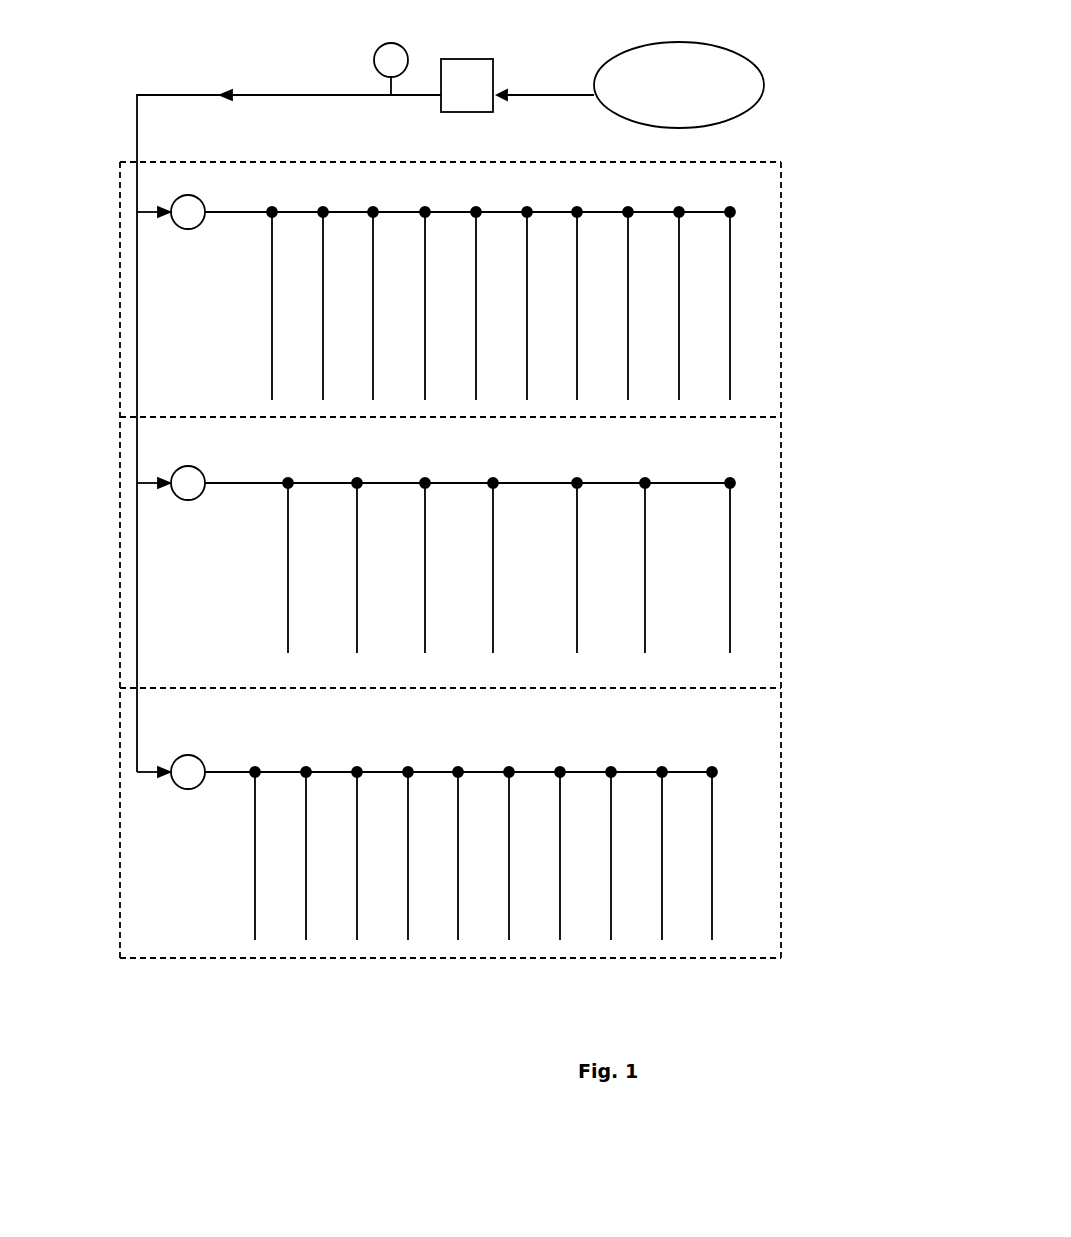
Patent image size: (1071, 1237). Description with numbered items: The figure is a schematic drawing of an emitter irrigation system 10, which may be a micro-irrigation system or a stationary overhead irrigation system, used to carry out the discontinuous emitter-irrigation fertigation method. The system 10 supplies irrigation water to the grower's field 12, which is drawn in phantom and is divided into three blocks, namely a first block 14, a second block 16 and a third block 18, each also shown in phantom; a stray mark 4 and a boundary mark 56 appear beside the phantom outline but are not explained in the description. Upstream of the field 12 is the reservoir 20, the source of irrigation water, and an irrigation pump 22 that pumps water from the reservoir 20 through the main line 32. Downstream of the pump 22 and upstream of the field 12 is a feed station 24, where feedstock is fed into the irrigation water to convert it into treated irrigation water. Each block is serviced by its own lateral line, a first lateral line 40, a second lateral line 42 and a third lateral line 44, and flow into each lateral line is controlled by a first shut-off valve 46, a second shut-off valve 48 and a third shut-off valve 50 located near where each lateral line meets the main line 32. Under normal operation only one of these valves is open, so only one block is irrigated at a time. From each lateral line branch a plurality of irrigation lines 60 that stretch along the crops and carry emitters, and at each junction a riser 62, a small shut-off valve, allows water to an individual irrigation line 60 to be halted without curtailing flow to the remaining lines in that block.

The irrigation system 10 is at (237, 1010).
The section line 4 is at (753, 676).
The field 12 is at (781, 450).
The first block 14 is at (781, 332).
The second block 16 is at (781, 568).
The third block 18 is at (781, 807).
The reservoir 20 is at (748, 60).
The irrigation pump 22 is at (458, 58).
The feed station 24 is at (400, 46).
The main line 32 is at (265, 93).
The first lateral line 40 is at (698, 212).
The second lateral line 42 is at (680, 484).
The third lateral line 44 is at (675, 772).
The first shut-off valve 46 is at (170, 195).
The second shut-off valve 48 is at (176, 471).
The third shut-off valve 50 is at (183, 789).
The enclosure boundary 56 is at (712, 940).
The irrigation lines 60 is at (527, 280).
The riser 62 is at (370, 212).